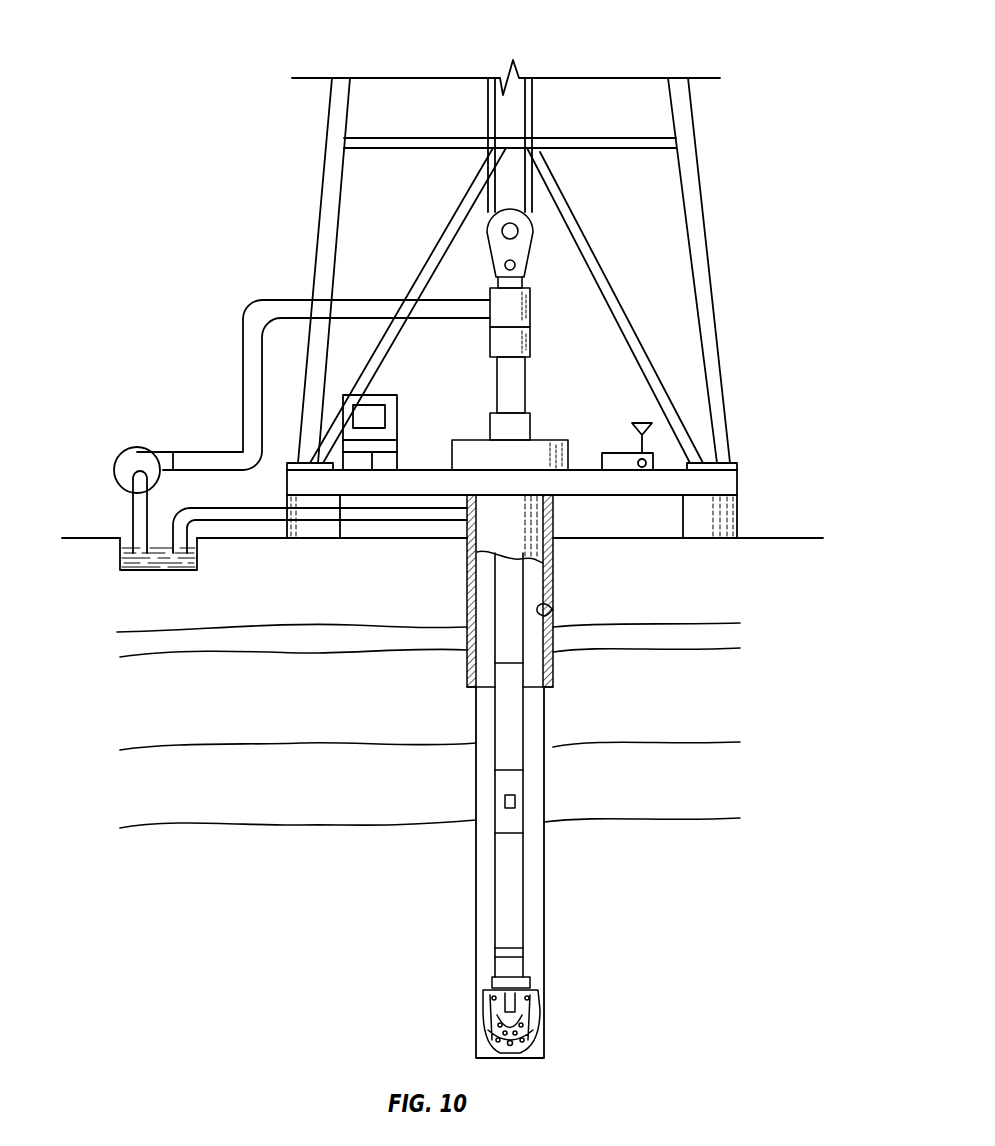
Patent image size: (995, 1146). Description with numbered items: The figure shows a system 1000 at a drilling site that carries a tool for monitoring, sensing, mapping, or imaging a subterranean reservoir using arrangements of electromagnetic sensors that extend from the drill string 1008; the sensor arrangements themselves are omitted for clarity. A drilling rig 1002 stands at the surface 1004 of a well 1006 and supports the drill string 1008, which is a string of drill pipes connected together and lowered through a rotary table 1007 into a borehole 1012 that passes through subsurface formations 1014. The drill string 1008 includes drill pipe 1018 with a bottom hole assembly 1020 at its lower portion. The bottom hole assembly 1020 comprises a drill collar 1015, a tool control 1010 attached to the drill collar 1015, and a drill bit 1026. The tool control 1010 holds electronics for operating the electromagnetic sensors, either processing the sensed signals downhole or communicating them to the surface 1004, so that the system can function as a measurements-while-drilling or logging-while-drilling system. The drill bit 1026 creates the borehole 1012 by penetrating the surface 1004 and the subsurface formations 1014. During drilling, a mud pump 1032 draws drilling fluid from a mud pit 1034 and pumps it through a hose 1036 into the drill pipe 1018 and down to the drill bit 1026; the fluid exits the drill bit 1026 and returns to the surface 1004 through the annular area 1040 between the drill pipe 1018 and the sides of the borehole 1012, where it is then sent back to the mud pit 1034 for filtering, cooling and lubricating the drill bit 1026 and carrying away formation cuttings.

The system 1000 is at (181, 45).
The drilling rig 1002 is at (712, 233).
The surface 1004 is at (763, 538).
The well 1006 is at (553, 531).
The rotary table 1007 is at (475, 440).
The drill string 1008 is at (526, 598).
The tool control 1010 is at (516, 801).
The borehole 1012 is at (553, 610).
The subsurface formations 1014 is at (115, 618).
The drill collar 1015 is at (517, 785).
The drill pipe 1018 is at (517, 710).
The bottom hole assembly 1020 is at (453, 677).
The drill bit 1026 is at (530, 1027).
The mud pump 1032 is at (139, 448).
The mud pit 1034 is at (125, 545).
The hose 1036 is at (243, 368).
The annular area 1040 is at (533, 735).